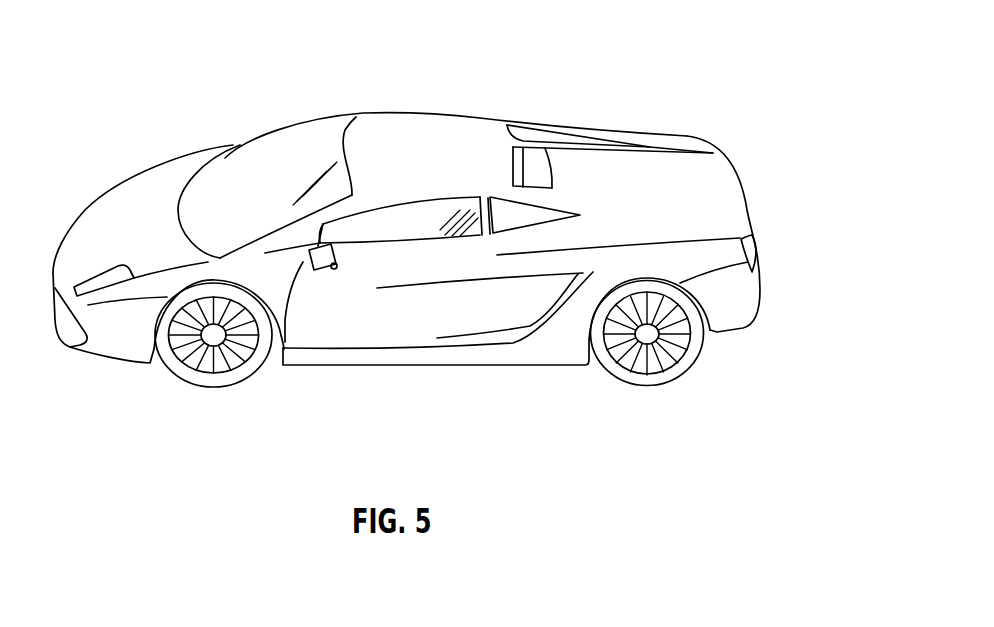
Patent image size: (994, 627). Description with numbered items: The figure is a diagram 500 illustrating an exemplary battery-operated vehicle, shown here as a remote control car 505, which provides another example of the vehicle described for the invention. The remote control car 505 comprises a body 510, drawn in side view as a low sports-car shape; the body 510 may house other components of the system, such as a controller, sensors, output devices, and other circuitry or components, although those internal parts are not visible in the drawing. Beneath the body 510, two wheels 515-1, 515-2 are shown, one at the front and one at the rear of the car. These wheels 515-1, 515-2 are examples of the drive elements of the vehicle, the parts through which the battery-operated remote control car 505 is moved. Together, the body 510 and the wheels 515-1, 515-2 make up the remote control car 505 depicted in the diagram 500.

The diagram 500 is at (453, 252).
The remote control car 505 is at (760, 115).
The body 510 is at (637, 132).
The wheel 515-1 is at (198, 388).
The wheel 515-2 is at (646, 386).